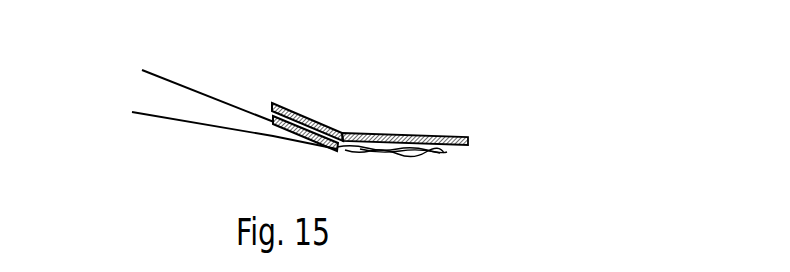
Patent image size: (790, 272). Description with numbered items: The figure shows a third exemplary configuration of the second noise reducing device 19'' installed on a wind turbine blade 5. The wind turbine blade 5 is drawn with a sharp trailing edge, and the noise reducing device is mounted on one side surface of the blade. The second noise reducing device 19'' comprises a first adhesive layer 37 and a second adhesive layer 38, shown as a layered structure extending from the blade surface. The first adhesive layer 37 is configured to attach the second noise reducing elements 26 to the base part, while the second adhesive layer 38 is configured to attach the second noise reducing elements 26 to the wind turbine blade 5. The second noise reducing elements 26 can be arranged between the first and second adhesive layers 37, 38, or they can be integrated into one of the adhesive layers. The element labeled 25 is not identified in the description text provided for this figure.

The wind turbine blade 5 is at (117, 76).
The first adhesive layer 37 is at (276, 116).
The second adhesive layer 38 is at (298, 133).
The first layer 25 is at (433, 140).
The second noise reducing elements 26 is at (412, 150).
The second noise reducing device 19'' is at (403, 94).